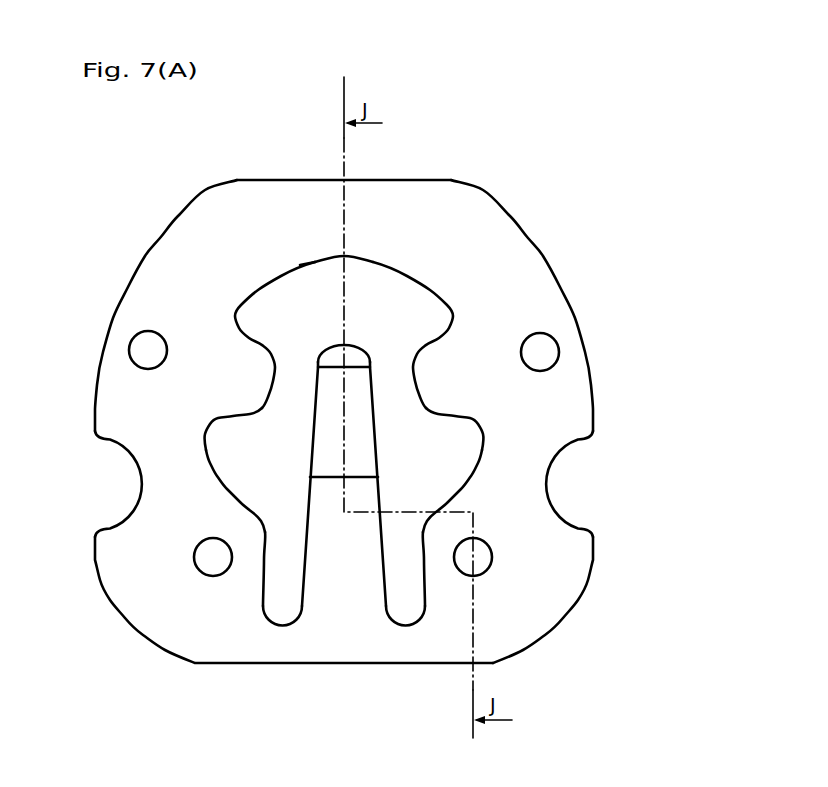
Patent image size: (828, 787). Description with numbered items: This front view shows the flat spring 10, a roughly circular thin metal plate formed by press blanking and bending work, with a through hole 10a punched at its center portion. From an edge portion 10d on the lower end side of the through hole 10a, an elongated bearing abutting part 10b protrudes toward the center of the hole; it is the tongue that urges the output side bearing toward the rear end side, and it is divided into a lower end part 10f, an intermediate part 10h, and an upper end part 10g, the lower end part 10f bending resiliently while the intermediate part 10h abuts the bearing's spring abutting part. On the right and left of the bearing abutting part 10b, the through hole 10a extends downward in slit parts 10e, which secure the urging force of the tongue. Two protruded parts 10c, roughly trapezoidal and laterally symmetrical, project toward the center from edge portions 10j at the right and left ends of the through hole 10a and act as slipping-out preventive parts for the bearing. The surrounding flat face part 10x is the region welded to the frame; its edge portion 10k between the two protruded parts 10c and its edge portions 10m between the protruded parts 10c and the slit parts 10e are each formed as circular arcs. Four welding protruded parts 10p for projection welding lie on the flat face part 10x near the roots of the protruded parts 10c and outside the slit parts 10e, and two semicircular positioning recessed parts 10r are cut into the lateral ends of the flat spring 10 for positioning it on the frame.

The flat spring 10 is at (549, 252).
The through hole 10a is at (393, 298).
The bearing abutting part 10b is at (317, 380).
The protruded parts 10c is at (272, 354).
The edge portion 10d is at (298, 612).
The slit parts 10e is at (302, 568).
The lower end part 10f is at (310, 500).
The upper end part 10g is at (358, 348).
The intermediate part 10h is at (344, 364).
The edge portions 10j is at (239, 316).
The edge portion 10k is at (322, 262).
The edge portions 10m is at (227, 486).
The welding protruded parts 10p is at (152, 331).
The positioning recessed parts 10r is at (122, 448).
The flat face part 10x is at (195, 242).